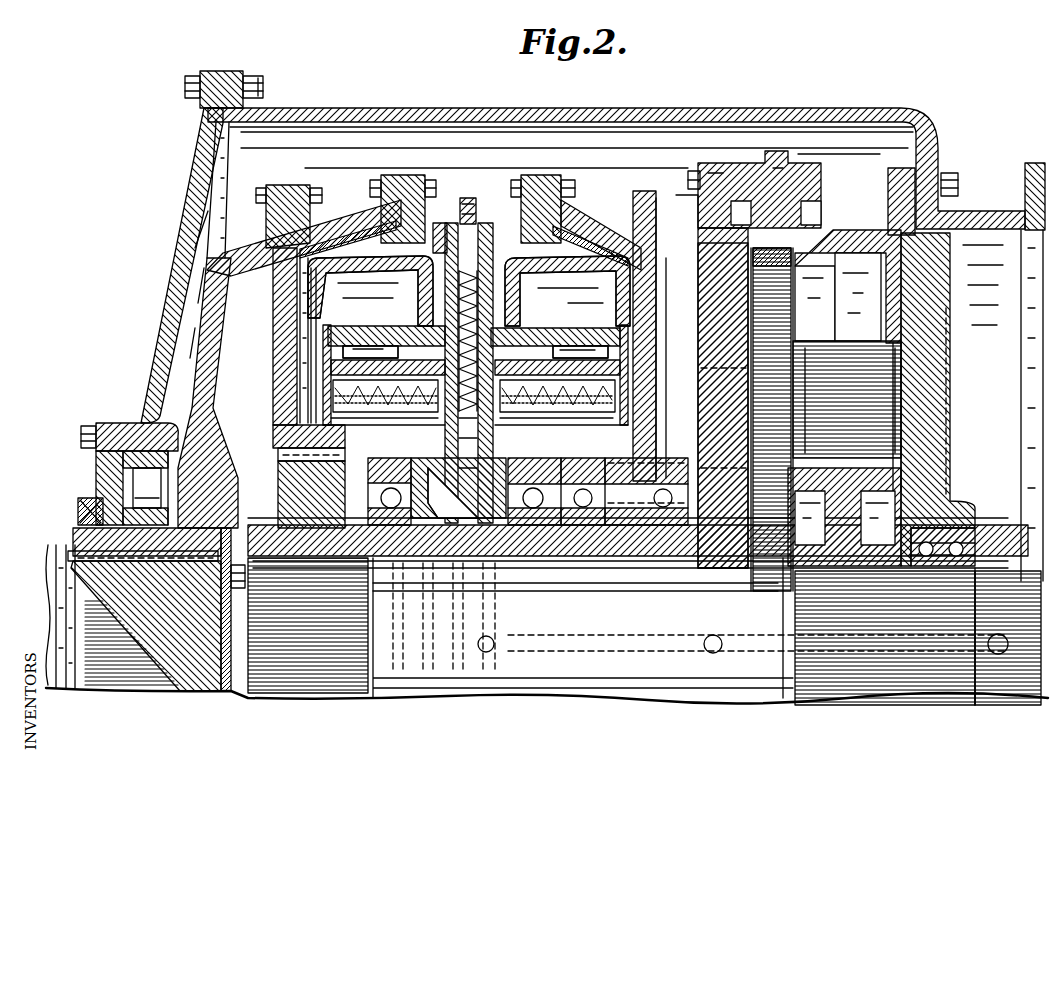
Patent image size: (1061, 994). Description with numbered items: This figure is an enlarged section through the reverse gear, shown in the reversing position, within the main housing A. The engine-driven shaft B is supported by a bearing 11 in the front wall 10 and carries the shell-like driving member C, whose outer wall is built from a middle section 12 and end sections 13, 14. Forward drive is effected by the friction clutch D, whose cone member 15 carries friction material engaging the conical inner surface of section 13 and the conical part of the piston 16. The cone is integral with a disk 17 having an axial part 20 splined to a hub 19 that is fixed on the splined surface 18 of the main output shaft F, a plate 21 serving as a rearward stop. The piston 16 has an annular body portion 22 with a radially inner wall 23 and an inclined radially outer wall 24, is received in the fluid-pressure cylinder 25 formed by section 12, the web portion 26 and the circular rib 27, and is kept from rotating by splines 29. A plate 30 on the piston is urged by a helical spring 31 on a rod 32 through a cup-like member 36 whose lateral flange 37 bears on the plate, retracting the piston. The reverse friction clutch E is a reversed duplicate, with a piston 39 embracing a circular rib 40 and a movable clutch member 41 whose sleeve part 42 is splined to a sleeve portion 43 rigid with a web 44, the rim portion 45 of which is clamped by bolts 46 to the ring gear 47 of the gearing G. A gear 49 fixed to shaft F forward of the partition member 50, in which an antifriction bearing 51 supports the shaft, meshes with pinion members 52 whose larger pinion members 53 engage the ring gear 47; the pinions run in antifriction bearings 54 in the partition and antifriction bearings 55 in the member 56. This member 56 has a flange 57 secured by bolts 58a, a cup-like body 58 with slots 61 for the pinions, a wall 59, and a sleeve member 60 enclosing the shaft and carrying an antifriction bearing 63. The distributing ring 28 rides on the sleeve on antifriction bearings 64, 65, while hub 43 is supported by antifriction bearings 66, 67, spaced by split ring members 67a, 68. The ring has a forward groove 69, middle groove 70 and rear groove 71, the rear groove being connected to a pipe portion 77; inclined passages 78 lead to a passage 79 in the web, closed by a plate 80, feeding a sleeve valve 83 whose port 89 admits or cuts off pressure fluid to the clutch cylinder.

The front wall 10 is at (178, 222).
The bearing 11 is at (147, 488).
The middle section 12 is at (520, 208).
The end section 13 is at (336, 215).
The end section 14 is at (603, 238).
The cone member 15 is at (272, 258).
The piston 16 is at (433, 287).
The disk 17 is at (266, 386).
The splined surface 18 is at (345, 617).
The hub 19 is at (292, 478).
The axial part 20 is at (280, 428).
The plate 21 is at (268, 459).
The annular body portion 22 is at (434, 302).
The radially inner wall 23 is at (360, 330).
The radially outer wall 24 is at (355, 258).
The fluid-pressure cylinder 25 is at (433, 228).
The web portion 26 is at (498, 305).
The circular rib 27 is at (322, 355).
The distributing ring 28 is at (525, 420).
The splines 29 is at (383, 335).
The plate 30 is at (330, 323).
The helical spring 31 is at (561, 382).
The rod 32 is at (520, 440).
The cup-like member 36 is at (384, 382).
The lateral flange 37 is at (315, 402).
The piston 39 is at (513, 283).
The circular rib 40 is at (578, 360).
The movable clutch member 41 is at (644, 245).
The sleeve part 42 is at (610, 488).
The sleeve portion 43 is at (619, 502).
The web 44 is at (684, 255).
The rim portion 45 is at (708, 150).
The bolts 46 is at (680, 160).
The ring gear 47 is at (768, 150).
The gear 49 is at (850, 515).
The partition member 50 is at (945, 421).
The antifriction bearing 51 is at (958, 533).
The pinion member 52 is at (846, 350).
The pinion member 53 is at (783, 320).
The antifriction bearings 54 is at (946, 345).
The antifriction bearings 55 is at (780, 521).
The member 56 is at (655, 555).
The flange 57 is at (888, 190).
The cup-like body 58 is at (842, 235).
The bolts 58a is at (950, 178).
The wall 59 is at (783, 297).
The sleeve member 60 is at (603, 552).
The slots 61 is at (788, 276).
The antifriction bearing 63 is at (382, 545).
The antifriction bearing 64 is at (386, 458).
The antifriction bearing 65 is at (523, 515).
The antifriction bearing 66 is at (626, 483).
The antifriction bearing 67 is at (641, 514).
The split ring member 67a is at (572, 515).
The split ring member 68 is at (372, 500).
The forward groove 69 is at (428, 525).
The middle groove 70 is at (445, 505).
The rear groove 71 is at (476, 525).
The pipe portion 77 is at (756, 623).
The inclined passages 78 is at (500, 425).
The passage 79 is at (445, 470).
The plate 80 is at (472, 360).
The sleeve valve 83 is at (470, 265).
The port 89 is at (468, 207).
The main housing A is at (545, 97).
The engine-driven shaft B is at (45, 540).
The driving member C is at (190, 376).
The friction clutch D is at (335, 222).
The friction clutch E is at (590, 240).
The main output shaft F is at (568, 665).
The gearing G is at (810, 245).